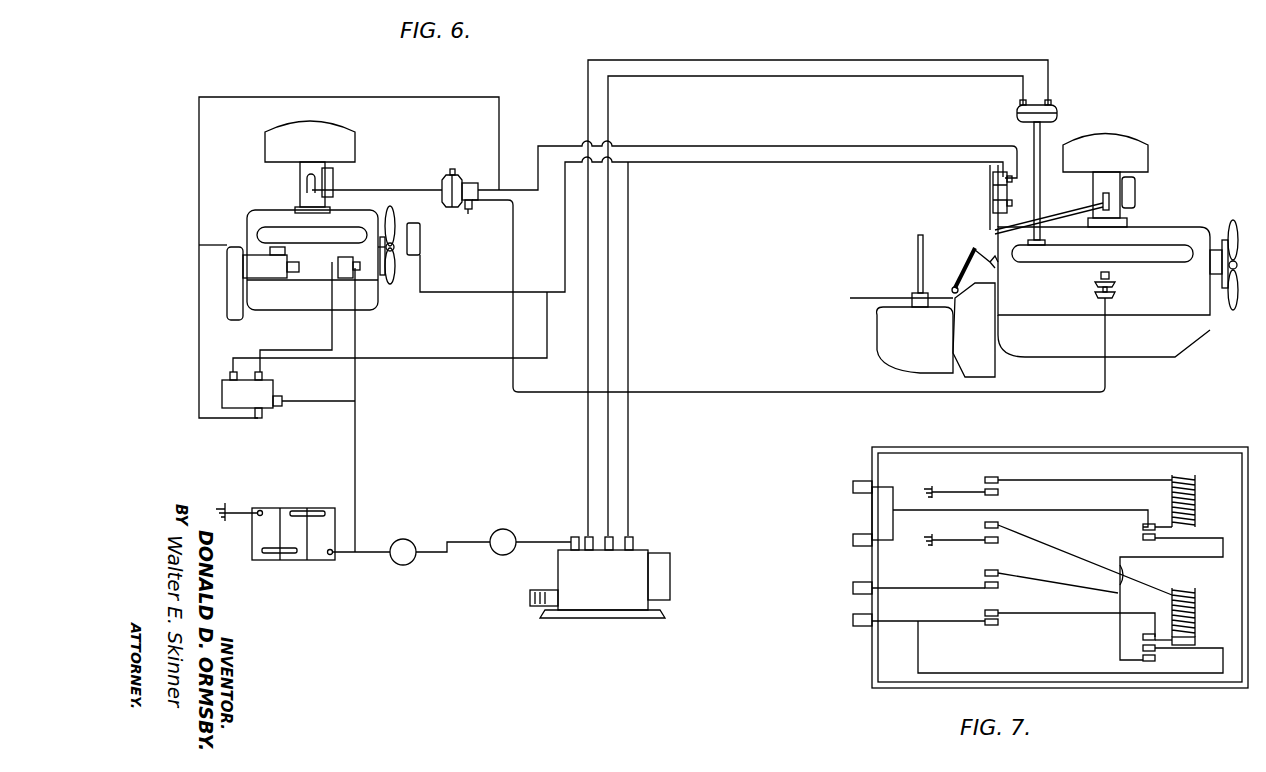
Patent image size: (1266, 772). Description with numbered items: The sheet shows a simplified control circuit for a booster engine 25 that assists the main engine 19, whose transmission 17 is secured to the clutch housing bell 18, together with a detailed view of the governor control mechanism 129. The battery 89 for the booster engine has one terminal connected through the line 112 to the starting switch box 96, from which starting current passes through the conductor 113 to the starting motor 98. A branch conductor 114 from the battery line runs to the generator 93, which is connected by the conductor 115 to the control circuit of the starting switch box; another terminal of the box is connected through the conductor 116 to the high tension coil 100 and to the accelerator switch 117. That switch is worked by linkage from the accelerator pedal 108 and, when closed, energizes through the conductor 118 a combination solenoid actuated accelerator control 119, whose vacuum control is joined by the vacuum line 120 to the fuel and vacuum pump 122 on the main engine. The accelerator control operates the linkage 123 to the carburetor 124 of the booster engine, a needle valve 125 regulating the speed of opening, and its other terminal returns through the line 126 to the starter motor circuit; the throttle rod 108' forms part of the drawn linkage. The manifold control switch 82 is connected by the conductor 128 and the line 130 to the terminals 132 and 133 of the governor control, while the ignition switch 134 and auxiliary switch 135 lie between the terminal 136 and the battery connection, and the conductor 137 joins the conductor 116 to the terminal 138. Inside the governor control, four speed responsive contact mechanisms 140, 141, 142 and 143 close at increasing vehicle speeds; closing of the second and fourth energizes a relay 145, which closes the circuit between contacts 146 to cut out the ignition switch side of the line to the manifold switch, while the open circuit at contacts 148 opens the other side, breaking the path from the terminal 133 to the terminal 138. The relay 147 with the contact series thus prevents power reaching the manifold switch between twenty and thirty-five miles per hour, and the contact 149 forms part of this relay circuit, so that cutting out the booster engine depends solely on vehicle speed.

In FIG. 6, the transmission 17 is at (880, 342).
In FIG. 6, the clutch housing bell 18 is at (992, 364).
In FIG. 6, the main engine 19 is at (1190, 345).
In FIG. 6, the booster engine 25 is at (290, 300).
In FIG. 6, the manifold control switch 82 is at (1057, 110).
In FIG. 6, the battery 89 is at (290, 508).
In FIG. 6, the generator 93 is at (370, 284).
In FIG. 6, the starting switch box 96 is at (244, 412).
In FIG. 6, the starting motor 98 is at (257, 262).
In FIG. 6, the high tension coil 100 is at (420, 228).
In FIG. 6, the accelerator pedal 108 is at (971, 251).
In FIG. 6, the throttle rod 108' is at (1052, 209).
In FIG. 6, the line 112 is at (357, 464).
In FIG. 6, the conductor 113 is at (199, 368).
In FIG. 6, the branch conductor 114 is at (357, 387).
In FIG. 6, the conductor 115 is at (305, 350).
In FIG. 6, the conductor 116 is at (432, 360).
In FIG. 6, the accelerator switch 117 is at (990, 180).
In FIG. 6, the conductor 118 is at (745, 160).
In FIG. 6, the solenoid actuated accelerator control 119 is at (465, 175).
In FIG. 6, the vacuum line 120 is at (513, 228).
In FIG. 6, the fuel and vacuum pump 122 is at (1116, 283).
In FIG. 6, the linkage 123 is at (384, 190).
In FIG. 6, the carburetor 124 is at (300, 178).
In FIG. 6, the needle valve 125 is at (468, 214).
In FIG. 6, the line 126 is at (393, 97).
In FIG. 6, the conductor 128 is at (714, 77).
In FIG. 6, the governor control mechanism 129 is at (598, 605).
In FIG. 6, the line 130 is at (588, 108).
In FIG. 6, the terminal 132 is at (609, 536).
In FIG. 7, the terminal 132 is at (853, 540).
In FIG. 6, the terminal 133 is at (590, 536).
In FIG. 7, the terminal 133 is at (853, 588).
In FIG. 6, the ignition switch 134 is at (398, 565).
In FIG. 6, the auxiliary switch 135 is at (500, 555).
In FIG. 6, the terminal 136 is at (574, 536).
In FIG. 7, the terminal 136 is at (853, 621).
In FIG. 6, the conductor 137 is at (629, 365).
In FIG. 6, the terminal 138 is at (631, 537).
In FIG. 7, the terminal 138 is at (853, 487).
In FIG. 7, the contact mechanism 140 is at (985, 480).
In FIG. 7, the contact mechanism 141 is at (985, 525).
In FIG. 7, the contact mechanism 142 is at (985, 574).
In FIG. 7, the contact mechanism 143 is at (1000, 622).
In FIG. 7, the relay 145 is at (1196, 606).
In FIG. 7, the contacts 146 is at (1143, 648).
In FIG. 7, the relay 147 is at (1195, 505).
In FIG. 7, the contacts 148 is at (1155, 658).
In FIG. 7, the contact 149 is at (1143, 530).